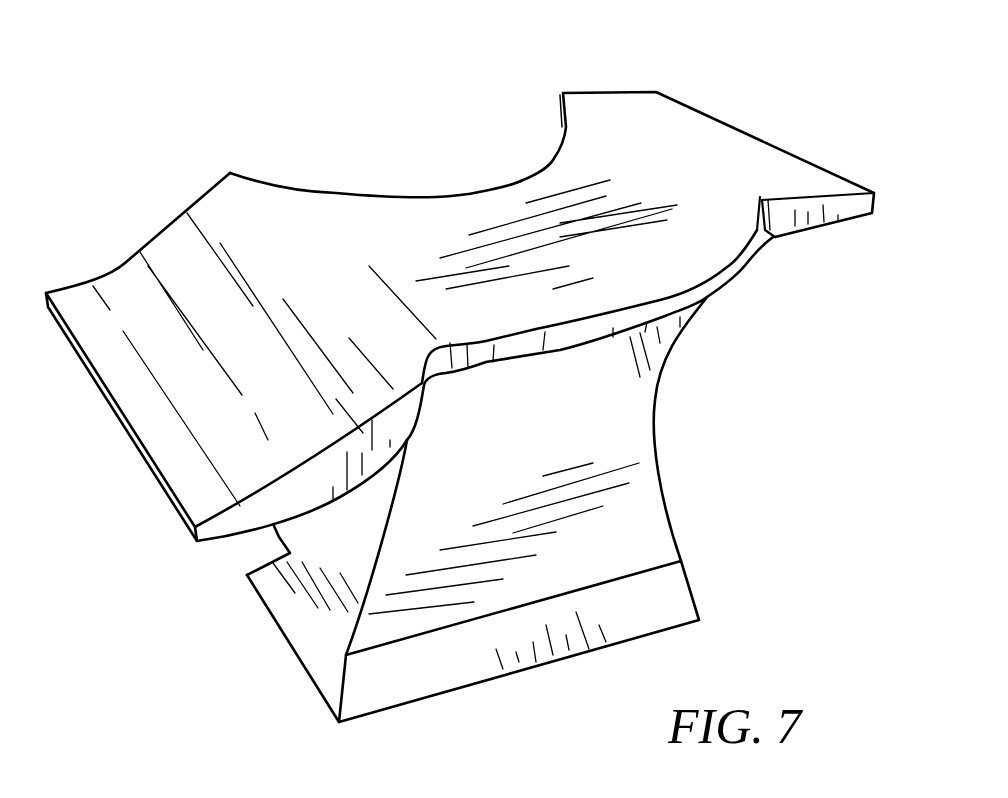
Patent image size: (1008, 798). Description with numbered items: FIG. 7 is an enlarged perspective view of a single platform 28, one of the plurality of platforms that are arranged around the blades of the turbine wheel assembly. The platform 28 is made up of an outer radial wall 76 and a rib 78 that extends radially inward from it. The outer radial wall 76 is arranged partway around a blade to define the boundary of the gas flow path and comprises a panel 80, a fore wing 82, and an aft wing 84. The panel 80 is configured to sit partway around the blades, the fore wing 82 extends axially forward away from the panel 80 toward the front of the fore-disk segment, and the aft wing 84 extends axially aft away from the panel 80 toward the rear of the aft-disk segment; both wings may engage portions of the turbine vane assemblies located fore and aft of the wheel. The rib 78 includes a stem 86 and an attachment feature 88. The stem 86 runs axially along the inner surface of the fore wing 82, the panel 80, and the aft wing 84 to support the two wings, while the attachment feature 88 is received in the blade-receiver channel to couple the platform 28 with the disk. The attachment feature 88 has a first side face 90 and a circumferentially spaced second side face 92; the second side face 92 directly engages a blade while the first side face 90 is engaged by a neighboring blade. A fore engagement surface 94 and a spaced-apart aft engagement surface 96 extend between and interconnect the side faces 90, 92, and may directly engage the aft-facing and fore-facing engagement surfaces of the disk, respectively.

The platform 28 is at (782, 63).
The outer radial wall 76 is at (384, 166).
The rib 78 is at (765, 364).
The panel 80 is at (481, 218).
The fore wing 82 is at (93, 260).
The aft wing 84 is at (629, 78).
The stem 86 is at (613, 411).
The attachment feature 88 is at (694, 589).
The first side face 90 is at (565, 569).
The second side face 92 is at (268, 540).
The fore engagement surface 94 is at (320, 600).
The aft engagement surface 96 is at (660, 498).